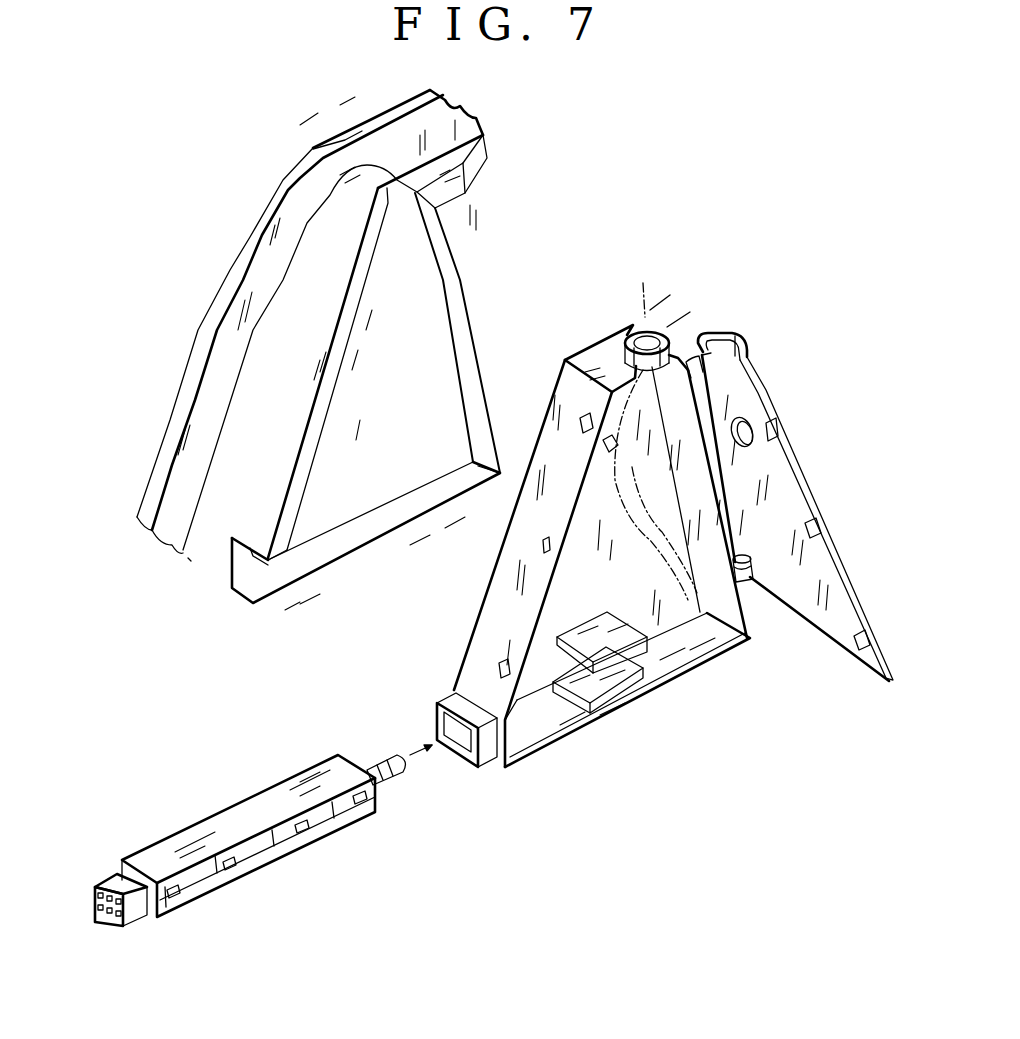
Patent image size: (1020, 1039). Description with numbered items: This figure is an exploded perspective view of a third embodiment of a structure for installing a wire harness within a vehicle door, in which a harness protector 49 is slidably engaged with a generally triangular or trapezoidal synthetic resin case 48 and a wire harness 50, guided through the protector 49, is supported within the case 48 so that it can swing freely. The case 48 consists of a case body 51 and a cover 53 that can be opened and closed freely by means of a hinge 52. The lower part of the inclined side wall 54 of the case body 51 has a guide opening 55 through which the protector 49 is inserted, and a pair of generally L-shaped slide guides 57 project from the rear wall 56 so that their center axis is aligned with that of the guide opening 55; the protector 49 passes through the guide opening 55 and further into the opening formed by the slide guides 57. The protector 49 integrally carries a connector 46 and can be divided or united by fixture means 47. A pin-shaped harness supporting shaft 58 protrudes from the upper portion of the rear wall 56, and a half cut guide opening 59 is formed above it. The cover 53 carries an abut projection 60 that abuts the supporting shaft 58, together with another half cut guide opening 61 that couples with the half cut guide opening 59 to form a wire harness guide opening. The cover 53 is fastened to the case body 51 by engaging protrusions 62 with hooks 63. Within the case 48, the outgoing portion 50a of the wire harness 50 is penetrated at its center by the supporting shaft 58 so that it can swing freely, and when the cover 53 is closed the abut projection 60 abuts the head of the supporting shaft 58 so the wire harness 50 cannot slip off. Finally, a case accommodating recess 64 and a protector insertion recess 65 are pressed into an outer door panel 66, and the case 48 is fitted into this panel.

The connector 46 is at (113, 927).
The fixture means 47 is at (232, 872).
The case 48 is at (575, 558).
The harness protector 49 is at (392, 620).
The wire harness 50 is at (395, 777).
The outgoing portion 50a is at (638, 486).
The case body 51 is at (526, 468).
The hinge 52 is at (753, 583).
The cover 53 is at (795, 507).
The inclined side wall 54 is at (493, 628).
The guide opening 55 is at (460, 765).
The rear wall 56 is at (540, 690).
The slide guides 57 is at (628, 687).
The harness supporting shaft 58 is at (607, 445).
The half cut guide opening 59 is at (622, 347).
The abut projection 60 is at (737, 418).
The half cut guide opening 61 is at (748, 350).
The protrusions 62 is at (500, 668).
The hooks 63 is at (860, 648).
The case accommodating recess 64 is at (352, 398).
The protector insertion recess 65 is at (240, 553).
The outer door panel 66 is at (210, 297).